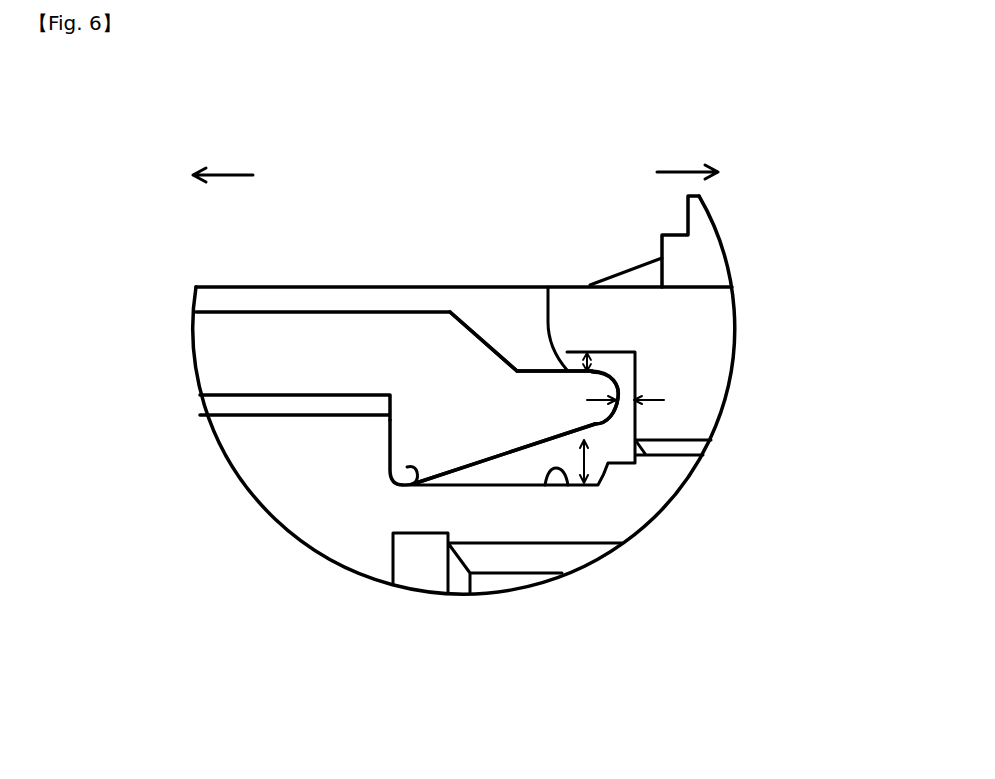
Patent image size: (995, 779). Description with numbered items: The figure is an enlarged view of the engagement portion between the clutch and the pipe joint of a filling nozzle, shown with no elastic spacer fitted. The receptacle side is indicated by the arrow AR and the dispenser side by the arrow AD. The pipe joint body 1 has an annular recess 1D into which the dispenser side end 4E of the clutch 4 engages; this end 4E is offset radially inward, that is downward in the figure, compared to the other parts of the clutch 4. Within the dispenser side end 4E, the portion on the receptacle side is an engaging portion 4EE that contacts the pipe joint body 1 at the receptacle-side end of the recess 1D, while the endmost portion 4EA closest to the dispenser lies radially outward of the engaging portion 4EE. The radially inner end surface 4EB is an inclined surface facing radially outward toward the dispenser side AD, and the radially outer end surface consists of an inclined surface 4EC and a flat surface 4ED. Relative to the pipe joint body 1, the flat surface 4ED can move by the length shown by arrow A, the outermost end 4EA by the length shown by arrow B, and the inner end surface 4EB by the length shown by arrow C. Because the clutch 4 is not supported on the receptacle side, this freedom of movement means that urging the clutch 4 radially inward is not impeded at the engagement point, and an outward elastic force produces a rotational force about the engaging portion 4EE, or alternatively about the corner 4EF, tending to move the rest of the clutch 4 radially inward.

The pipe joint body 1 is at (275, 477).
The recess 1D is at (548, 483).
The clutch 4 is at (355, 343).
The dispenser side end of the clutch 4E is at (463, 402).
The endmost portion 4EA is at (590, 365).
The radially inner end surface 4EB is at (472, 466).
The inclined surface 4EC is at (476, 300).
The flat surface 4ED is at (570, 368).
The engaging portion 4EE is at (413, 481).
The corner 4EF is at (387, 421).
The arrow indicating movable length of flat surface A is at (585, 390).
The arrow indicating movable length of endmost portion B is at (635, 385).
The arrow indicating movable length of radially inner end surface C is at (618, 465).
The arrow indicating receptacle side AR is at (228, 175).
The arrow indicating dispenser side AD is at (677, 172).